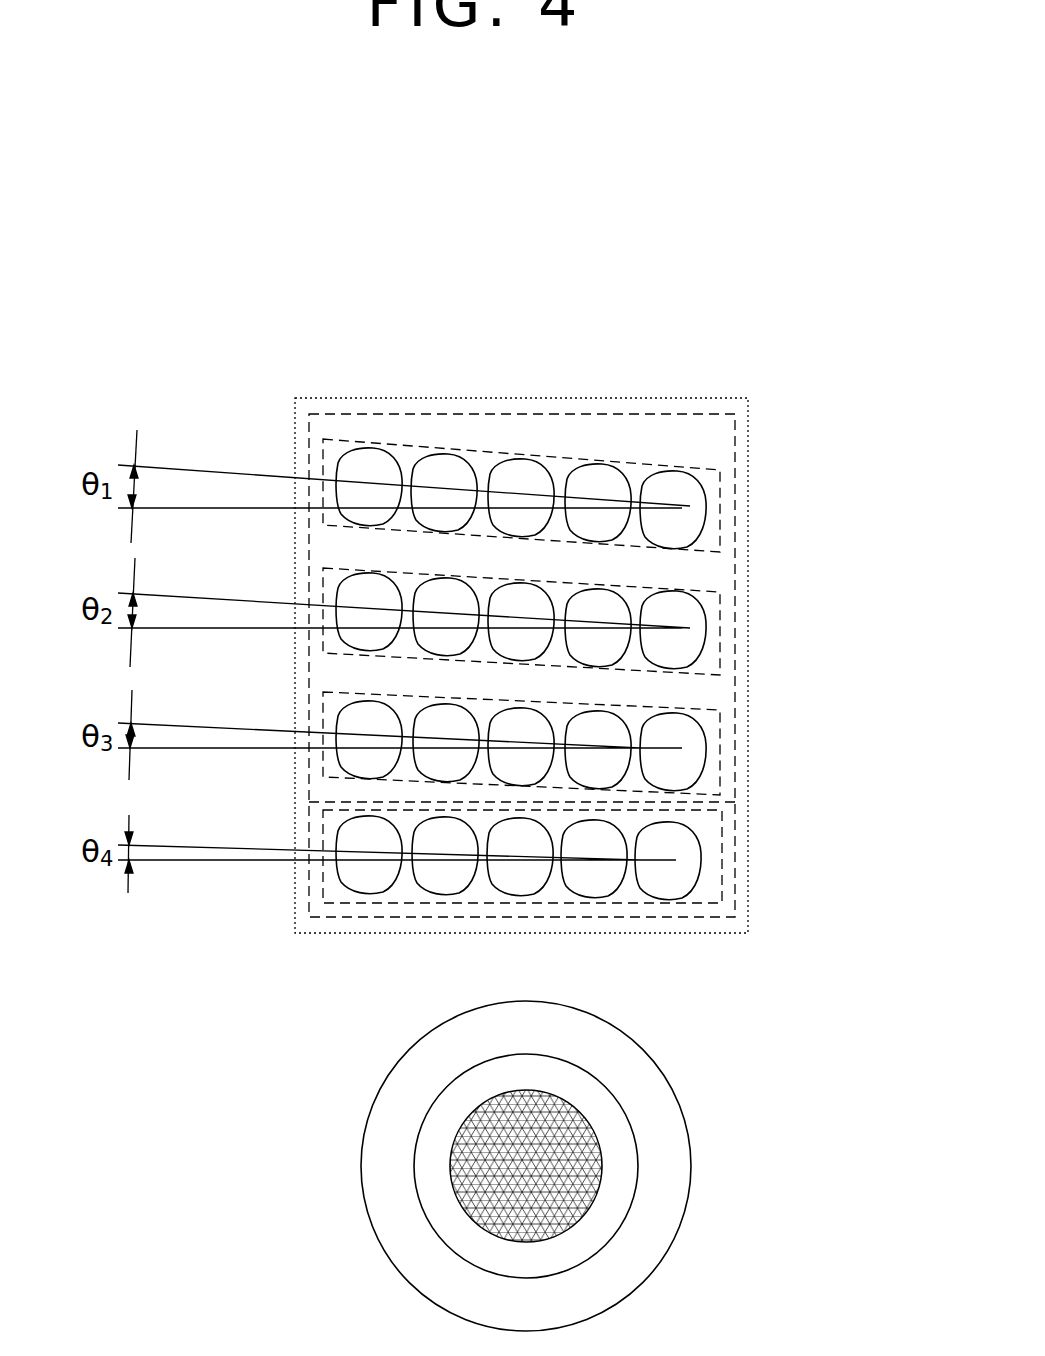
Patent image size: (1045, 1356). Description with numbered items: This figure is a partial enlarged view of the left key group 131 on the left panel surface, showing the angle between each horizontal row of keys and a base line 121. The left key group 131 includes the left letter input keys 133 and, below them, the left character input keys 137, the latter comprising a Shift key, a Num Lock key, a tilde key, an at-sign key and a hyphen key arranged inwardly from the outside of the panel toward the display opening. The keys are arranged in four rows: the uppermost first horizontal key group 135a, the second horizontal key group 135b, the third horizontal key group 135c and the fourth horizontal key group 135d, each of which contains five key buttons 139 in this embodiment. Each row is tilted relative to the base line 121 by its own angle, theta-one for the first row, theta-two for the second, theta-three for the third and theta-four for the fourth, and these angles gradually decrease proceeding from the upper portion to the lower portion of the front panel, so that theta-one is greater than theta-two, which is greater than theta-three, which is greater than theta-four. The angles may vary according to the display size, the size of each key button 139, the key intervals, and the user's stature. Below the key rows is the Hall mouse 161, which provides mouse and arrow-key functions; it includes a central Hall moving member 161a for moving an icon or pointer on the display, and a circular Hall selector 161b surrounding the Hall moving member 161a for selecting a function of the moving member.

The left key group 131 is at (383, 398).
The left letter input keys 133 is at (502, 414).
The first horizontal key group 135a is at (721, 511).
The second horizontal key group 135b is at (721, 636).
The third horizontal key group 135c is at (721, 753).
The fourth horizontal key group 135d is at (721, 851).
The left character input keys 137 is at (727, 918).
The key buttons 139 is at (648, 472).
The base line 121 is at (213, 508).
The Hall mouse 161 is at (426, 1166).
The Hall moving member 161a is at (450, 1183).
The Hall selector 161b is at (376, 1098).